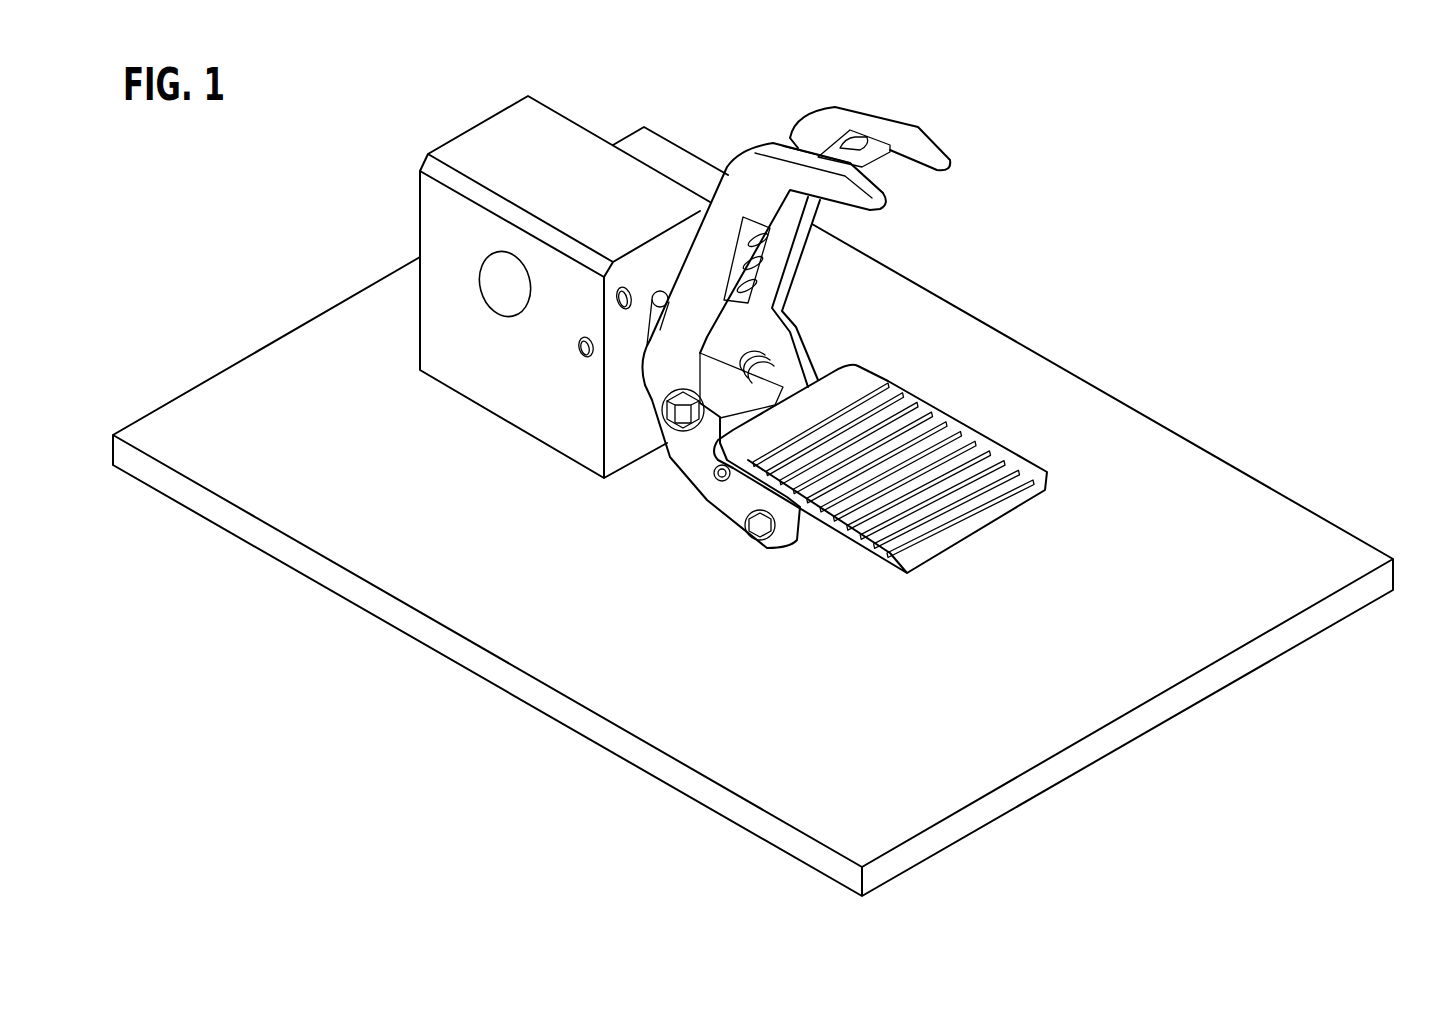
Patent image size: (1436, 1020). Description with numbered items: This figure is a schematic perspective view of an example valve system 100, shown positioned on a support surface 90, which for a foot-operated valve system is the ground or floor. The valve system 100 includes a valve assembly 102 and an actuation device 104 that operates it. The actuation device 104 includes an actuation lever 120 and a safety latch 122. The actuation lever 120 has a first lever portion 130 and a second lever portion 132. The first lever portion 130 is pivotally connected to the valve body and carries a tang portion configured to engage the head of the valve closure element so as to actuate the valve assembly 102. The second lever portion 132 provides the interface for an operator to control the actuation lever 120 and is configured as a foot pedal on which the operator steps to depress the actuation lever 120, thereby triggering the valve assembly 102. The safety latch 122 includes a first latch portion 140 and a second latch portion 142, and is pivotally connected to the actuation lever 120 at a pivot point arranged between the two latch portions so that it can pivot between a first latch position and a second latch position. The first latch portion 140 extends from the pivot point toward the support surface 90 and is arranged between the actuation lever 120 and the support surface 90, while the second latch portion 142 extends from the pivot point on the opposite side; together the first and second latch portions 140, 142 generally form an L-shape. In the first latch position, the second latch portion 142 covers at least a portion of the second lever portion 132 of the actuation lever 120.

The support surface 90 is at (1250, 515).
The valve system 100 is at (330, 129).
The valve assembly 102 is at (580, 97).
The actuation device 104 is at (962, 198).
The actuation lever 120 is at (896, 452).
The safety latch 122 is at (859, 230).
The first lever portion 130 is at (657, 286).
The second lever portion 132 is at (982, 436).
The first latch portion 140 is at (697, 463).
The second latch portion 142 is at (753, 172).